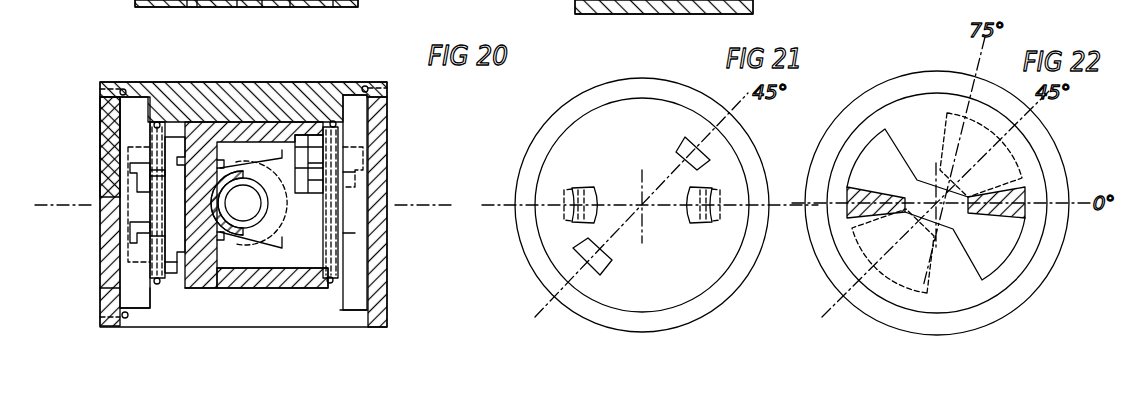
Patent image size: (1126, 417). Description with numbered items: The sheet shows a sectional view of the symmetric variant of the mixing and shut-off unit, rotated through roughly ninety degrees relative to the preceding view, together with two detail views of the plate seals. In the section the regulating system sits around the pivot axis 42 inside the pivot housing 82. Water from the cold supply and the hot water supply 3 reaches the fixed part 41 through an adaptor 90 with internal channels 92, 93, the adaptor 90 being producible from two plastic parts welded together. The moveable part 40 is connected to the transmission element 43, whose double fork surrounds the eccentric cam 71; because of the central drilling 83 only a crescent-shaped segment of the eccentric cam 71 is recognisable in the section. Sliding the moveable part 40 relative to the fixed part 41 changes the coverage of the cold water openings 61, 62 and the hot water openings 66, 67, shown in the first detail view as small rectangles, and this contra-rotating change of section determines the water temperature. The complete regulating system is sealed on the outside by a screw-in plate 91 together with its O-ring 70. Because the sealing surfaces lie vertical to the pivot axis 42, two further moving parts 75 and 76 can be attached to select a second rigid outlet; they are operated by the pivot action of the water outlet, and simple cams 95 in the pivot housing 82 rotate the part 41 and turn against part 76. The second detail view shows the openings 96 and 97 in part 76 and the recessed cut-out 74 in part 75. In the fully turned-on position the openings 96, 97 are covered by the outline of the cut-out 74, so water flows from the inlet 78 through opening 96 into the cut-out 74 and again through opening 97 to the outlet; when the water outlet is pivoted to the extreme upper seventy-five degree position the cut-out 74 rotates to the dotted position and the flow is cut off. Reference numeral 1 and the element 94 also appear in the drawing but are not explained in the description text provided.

In FIG. 20, the housing cover plate 1 is at (245, 98).
In FIG. 20, the hot water supply 3 is at (244, 0).
In FIG. 20, the moveable part 40 is at (358, 128).
In FIG. 21, the moveable part 40 is at (690, 273).
In FIG. 20, the fixed part 41 is at (372, 185).
In FIG. 21, the fixed part 41 is at (552, 278).
In FIG. 20, the pivot axis 42 is at (78, 205).
In FIG. 20, the transmission element 43 is at (315, 187).
In FIG. 21, the opening 61 is at (582, 187).
In FIG. 21, the opening 62 is at (562, 217).
In FIG. 21, the opening 66 is at (717, 190).
In FIG. 21, the opening 67 is at (680, 147).
In FIG. 20, the O-ring 70 is at (123, 89).
In FIG. 20, the eccentric cam 71 is at (232, 165).
In FIG. 20, the recessed cut-out 74 is at (172, 192).
In FIG. 22, the recessed cut-out 74 is at (957, 143).
In FIG. 20, the moveable part 75 is at (180, 138).
In FIG. 22, the moveable part 75 is at (1030, 280).
In FIG. 20, the moveable part 76 is at (147, 145).
In FIG. 22, the moveable part 76 is at (967, 285).
In FIG. 20, the inlet 78 is at (130, 182).
In FIG. 20, the pivot housing 82 is at (285, 278).
In FIG. 20, the central drilling 83 is at (282, 172).
In FIG. 20, the adaptor 90 is at (128, 117).
In FIG. 20, the screw-in plate 91 is at (112, 287).
In FIG. 20, the internal channel 92 is at (357, 172).
In FIG. 20, the internal channel 93 is at (355, 233).
In FIG. 20, the projection 94 is at (163, 265).
In FIG. 20, the cam 95 is at (160, 122).
In FIG. 20, the opening 96 is at (158, 172).
In FIG. 22, the opening 96 is at (847, 215).
In FIG. 20, the opening 97 is at (152, 238).
In FIG. 22, the opening 97 is at (1027, 197).